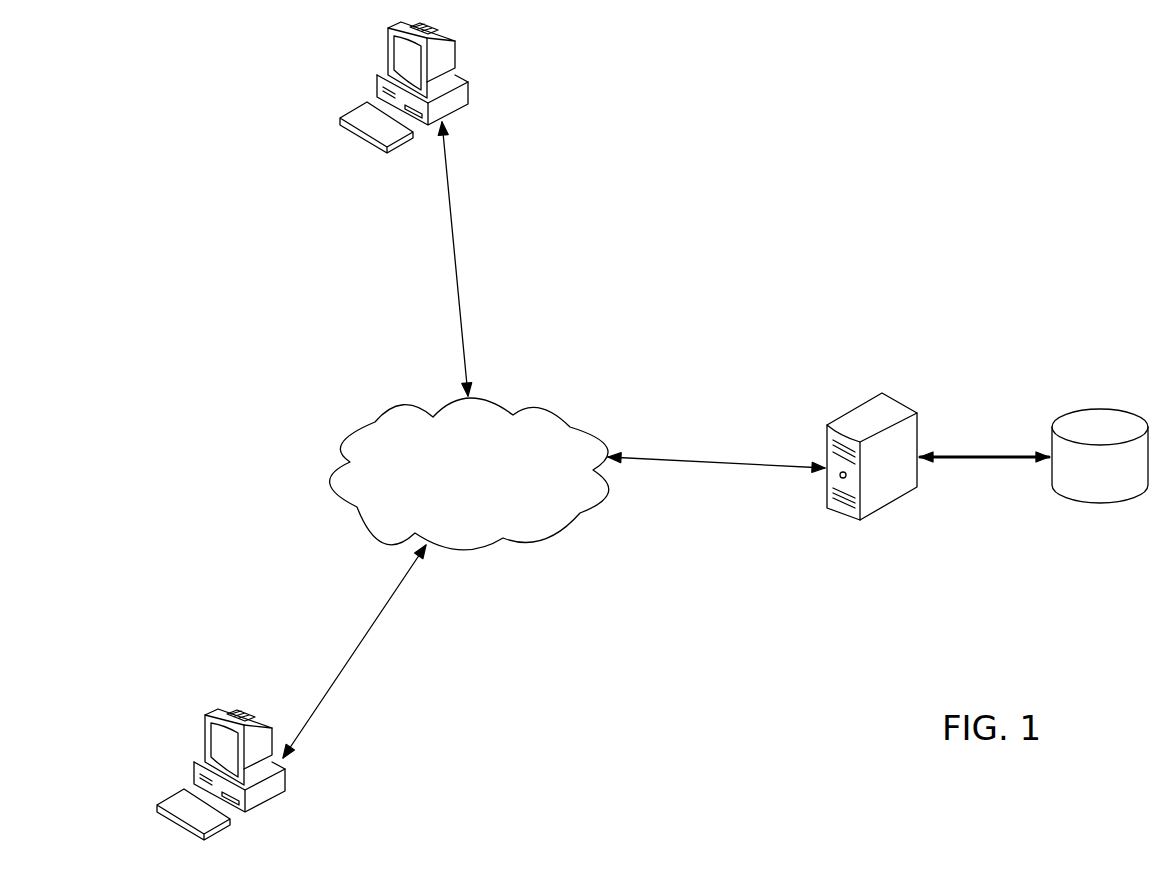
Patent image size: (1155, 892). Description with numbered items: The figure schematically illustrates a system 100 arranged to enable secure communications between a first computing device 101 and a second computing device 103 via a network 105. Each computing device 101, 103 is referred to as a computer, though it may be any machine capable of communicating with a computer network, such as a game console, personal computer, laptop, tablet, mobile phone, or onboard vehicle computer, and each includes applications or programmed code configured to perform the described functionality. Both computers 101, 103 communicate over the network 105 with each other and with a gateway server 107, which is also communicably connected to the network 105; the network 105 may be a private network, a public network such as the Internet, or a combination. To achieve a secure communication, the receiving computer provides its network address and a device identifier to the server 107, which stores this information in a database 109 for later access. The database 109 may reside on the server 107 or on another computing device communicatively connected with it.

The network environment / system 100 is at (680, 192).
The first computing device 101 is at (387, 57).
The second computing device 103 is at (202, 745).
The network 105 is at (350, 460).
The gateway server 107 is at (840, 513).
The database 109 is at (1100, 503).